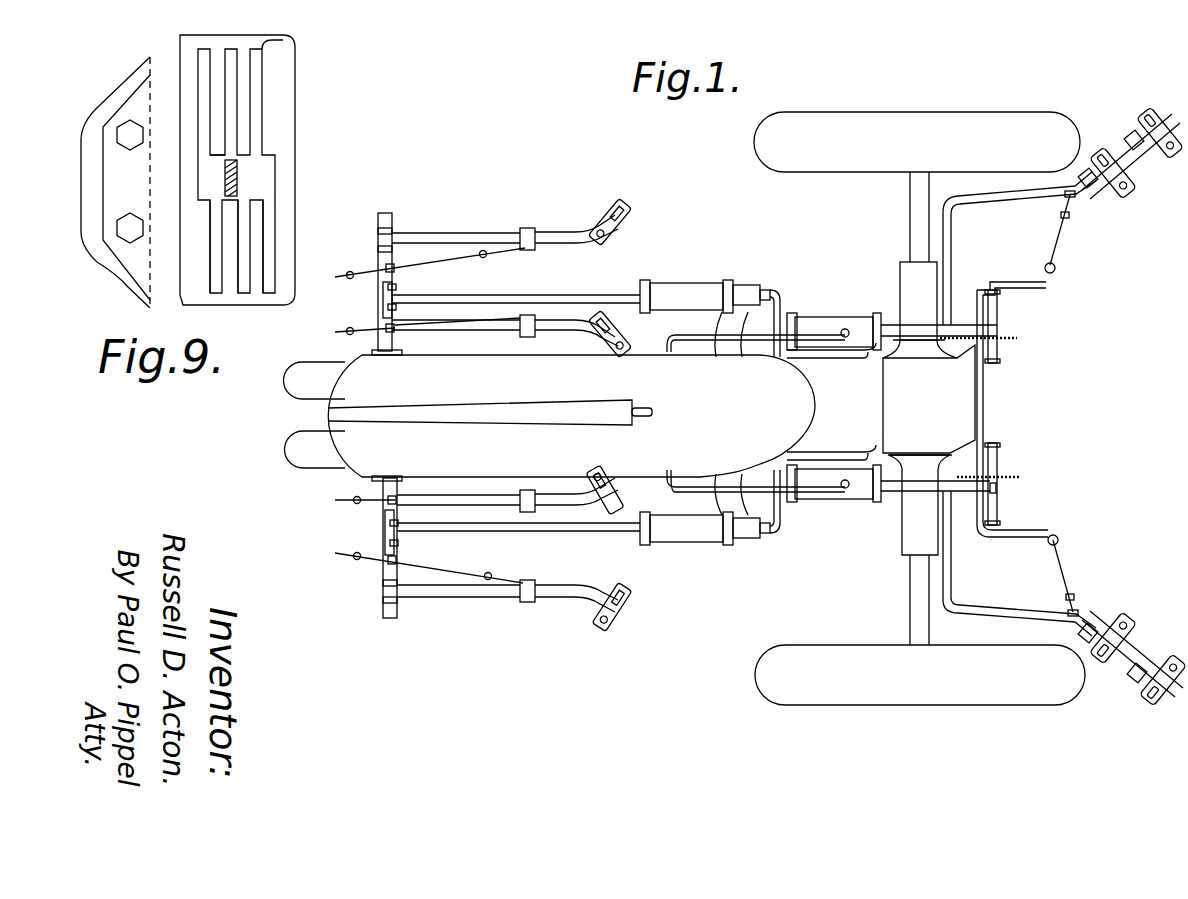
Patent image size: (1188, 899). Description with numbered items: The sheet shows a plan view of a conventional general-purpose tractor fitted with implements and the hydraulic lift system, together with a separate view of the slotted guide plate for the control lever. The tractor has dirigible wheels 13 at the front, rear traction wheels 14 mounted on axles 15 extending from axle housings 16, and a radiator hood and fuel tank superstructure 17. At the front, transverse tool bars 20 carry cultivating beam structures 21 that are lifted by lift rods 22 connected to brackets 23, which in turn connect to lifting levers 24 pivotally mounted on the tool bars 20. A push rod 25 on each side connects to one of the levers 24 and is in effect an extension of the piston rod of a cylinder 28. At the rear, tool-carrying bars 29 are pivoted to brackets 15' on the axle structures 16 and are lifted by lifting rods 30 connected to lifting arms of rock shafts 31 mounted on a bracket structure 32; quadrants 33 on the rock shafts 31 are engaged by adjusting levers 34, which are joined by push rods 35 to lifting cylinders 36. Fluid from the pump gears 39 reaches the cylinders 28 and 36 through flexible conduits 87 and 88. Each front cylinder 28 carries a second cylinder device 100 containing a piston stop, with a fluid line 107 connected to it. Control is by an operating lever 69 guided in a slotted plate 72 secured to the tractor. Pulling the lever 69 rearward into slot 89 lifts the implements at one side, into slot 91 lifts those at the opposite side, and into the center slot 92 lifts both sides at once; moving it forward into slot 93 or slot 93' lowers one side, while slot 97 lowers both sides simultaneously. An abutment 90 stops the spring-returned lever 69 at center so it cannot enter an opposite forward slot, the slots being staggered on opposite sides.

In FIG. 1, the dirigible wheels 13 is at (302, 440).
In FIG. 1, the rear traction wheels 14 is at (907, 114).
In FIG. 1, the axles 15 is at (892, 408).
In FIG. 1, the brackets 15' is at (995, 410).
In FIG. 1, the axle housings 16 is at (910, 540).
In FIG. 1, the radiator hood and fuel tank superstructure 17 is at (370, 455).
In FIG. 1, the tool bars 20 is at (380, 575).
In FIG. 1, the cultivating beam structures 21 is at (483, 233).
In FIG. 1, the lift rods 22 is at (345, 330).
In FIG. 1, the brackets 23 is at (397, 287).
In FIG. 1, the lifting levers 24 is at (388, 290).
In FIG. 1, the push rod 25 is at (512, 280).
In FIG. 1, the cylinder 28 is at (685, 283).
In FIG. 1, the tool-carrying bars 29 is at (1030, 198).
In FIG. 1, the lifting rods 30 is at (1068, 250).
In FIG. 1, the rock shafts 31 is at (998, 306).
In FIG. 1, the bracket structure 32 is at (992, 505).
In FIG. 1, the quadrants 33 is at (1010, 340).
In FIG. 1, the adjusting levers 34 is at (1000, 330).
In FIG. 1, the push rods 35 is at (925, 345).
In FIG. 1, the lifting cylinders 36 is at (838, 318).
In FIG. 1, the pump gears 39 is at (782, 302).
In FIG. 9, the operating lever 69 is at (225, 178).
In FIG. 1, the operating lever 69 is at (745, 292).
In FIG. 9, the slotted plate 72 is at (138, 100).
In FIG. 1, the flexible conduit 87 is at (705, 329).
In FIG. 1, the flexible conduit 88 is at (818, 362).
In FIG. 9, the slot 89 is at (270, 292).
In FIG. 9, the abutment 90 is at (240, 150).
In FIG. 9, the slot 91 is at (220, 292).
In FIG. 9, the center slot 92 is at (245, 292).
In FIG. 9, the slot 93 is at (212, 163).
In FIG. 9, the slot 93' is at (295, 35).
In FIG. 9, the slot 97 is at (229, 50).
In FIG. 1, the second cylinder device 100 is at (762, 290).
In FIG. 1, the fluid line 107 is at (744, 330).